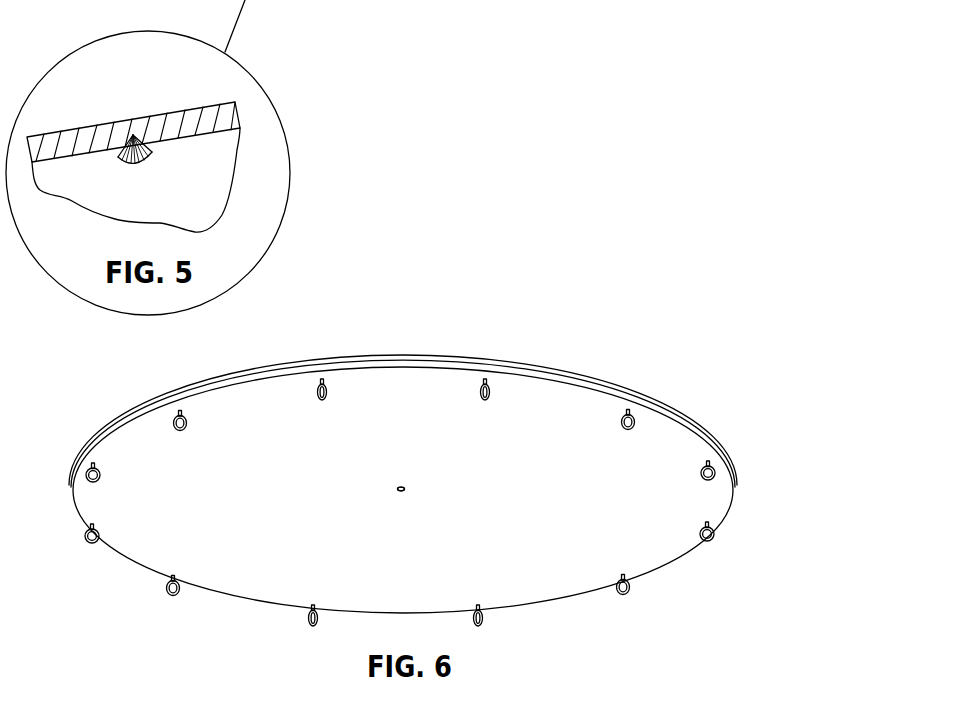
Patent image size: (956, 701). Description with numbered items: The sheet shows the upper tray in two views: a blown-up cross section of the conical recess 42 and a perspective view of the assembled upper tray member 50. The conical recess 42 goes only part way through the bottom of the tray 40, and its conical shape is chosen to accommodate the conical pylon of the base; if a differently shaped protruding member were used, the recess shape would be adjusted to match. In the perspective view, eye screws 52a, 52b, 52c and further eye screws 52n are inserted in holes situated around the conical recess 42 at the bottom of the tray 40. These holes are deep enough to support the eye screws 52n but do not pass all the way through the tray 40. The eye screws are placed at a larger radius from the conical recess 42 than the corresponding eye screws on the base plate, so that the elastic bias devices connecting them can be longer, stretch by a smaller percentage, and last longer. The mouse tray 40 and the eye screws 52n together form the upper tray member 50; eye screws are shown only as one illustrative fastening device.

In FIG. 5, the conical recess 42 is at (152, 158).
In FIG. 6, the conical recess 42 is at (398, 492).
In FIG. 6, the upper tray member 50 is at (513, 360).
In FIG. 6, the tray 40 is at (399, 466).
In FIG. 6, the eye screw 52a is at (640, 418).
In FIG. 6, the eye screw 52b is at (718, 473).
In FIG. 6, the eye screw 52c is at (717, 540).
In FIG. 6, the eye screws 52n is at (633, 593).